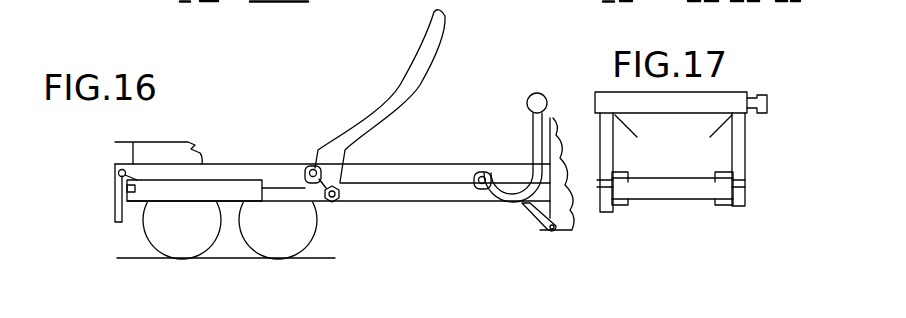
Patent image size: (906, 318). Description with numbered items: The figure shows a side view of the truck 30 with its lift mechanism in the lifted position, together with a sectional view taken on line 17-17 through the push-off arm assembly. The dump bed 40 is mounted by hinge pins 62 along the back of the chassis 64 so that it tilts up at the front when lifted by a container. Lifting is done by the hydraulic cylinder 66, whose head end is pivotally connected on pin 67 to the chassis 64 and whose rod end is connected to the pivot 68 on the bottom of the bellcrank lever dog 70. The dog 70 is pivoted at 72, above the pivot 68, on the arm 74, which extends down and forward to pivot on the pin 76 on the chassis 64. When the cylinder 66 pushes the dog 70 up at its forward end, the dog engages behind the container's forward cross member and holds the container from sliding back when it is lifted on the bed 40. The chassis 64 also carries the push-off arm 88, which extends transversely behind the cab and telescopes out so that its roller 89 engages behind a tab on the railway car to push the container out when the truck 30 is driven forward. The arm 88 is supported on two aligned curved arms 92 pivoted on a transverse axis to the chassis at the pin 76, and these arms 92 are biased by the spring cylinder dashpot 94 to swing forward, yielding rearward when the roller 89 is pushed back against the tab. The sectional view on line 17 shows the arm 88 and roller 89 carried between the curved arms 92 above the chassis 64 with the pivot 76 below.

In FIG. 16, the dump bed 40 is at (113, 150).
In FIG. 16, the hinge pins 62 is at (116, 174).
In FIG. 16, the pin 67 is at (114, 197).
In FIG. 16, the truck 30 is at (214, 164).
In FIG. 16, the hydraulic cylinder 66 is at (228, 180).
In FIG. 16, the pivot 72 is at (315, 152).
In FIG. 16, the bellcrank lever dog 70 is at (402, 77).
In FIG. 16, the pivot 68 is at (333, 203).
In FIG. 16, the chassis 64 is at (383, 181).
In FIG. 17, the chassis 64 is at (650, 199).
In FIG. 16, the arm 74 is at (423, 184).
In FIG. 16, the pin 76 is at (480, 188).
In FIG. 17, the pin 76 is at (700, 174).
In FIG. 16, the push-off arm 88 is at (529, 93).
In FIG. 17, the push-off arm 88 is at (718, 95).
In FIG. 17, the roller 89 is at (763, 95).
In FIG. 16, the curved arms 92 is at (532, 127).
In FIG. 17, the curved arms 92 is at (731, 147).
In FIG. 16, the spring cylinder dashpot 94 is at (536, 220).
In FIG. 16, the section line 17- 17 is at (547, 70).